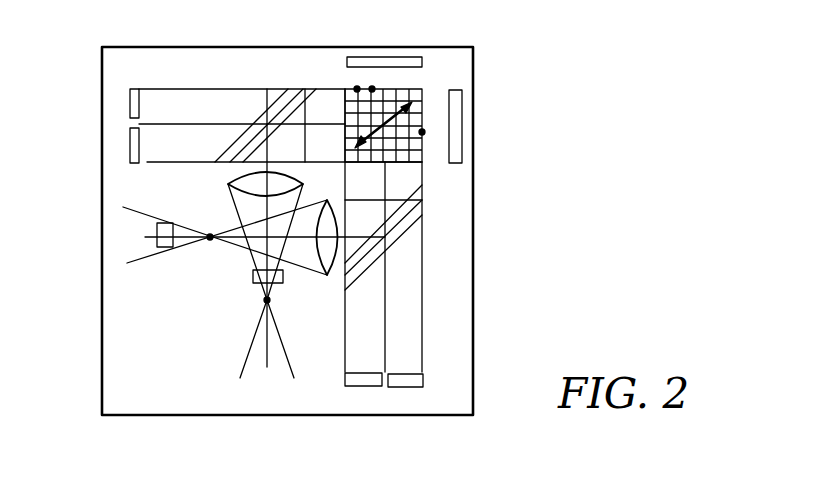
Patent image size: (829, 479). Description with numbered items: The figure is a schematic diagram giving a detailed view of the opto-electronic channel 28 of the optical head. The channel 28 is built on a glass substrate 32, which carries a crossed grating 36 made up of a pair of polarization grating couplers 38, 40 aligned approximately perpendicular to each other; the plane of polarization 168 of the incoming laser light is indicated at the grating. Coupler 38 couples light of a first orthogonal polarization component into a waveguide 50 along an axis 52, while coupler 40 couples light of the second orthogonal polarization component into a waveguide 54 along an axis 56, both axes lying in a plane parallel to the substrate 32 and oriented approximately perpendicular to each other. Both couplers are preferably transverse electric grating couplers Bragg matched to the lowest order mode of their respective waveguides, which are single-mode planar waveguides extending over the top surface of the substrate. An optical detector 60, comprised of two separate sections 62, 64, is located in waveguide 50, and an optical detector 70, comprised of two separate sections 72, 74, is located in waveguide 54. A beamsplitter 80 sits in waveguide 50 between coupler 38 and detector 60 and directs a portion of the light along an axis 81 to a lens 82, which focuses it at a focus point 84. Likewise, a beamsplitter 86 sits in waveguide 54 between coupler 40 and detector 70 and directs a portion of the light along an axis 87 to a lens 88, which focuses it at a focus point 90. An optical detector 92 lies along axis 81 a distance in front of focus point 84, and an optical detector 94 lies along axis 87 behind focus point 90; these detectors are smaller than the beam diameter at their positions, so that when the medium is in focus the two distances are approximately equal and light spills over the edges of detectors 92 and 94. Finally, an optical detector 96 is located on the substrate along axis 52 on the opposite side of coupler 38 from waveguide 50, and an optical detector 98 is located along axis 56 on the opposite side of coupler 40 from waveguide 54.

The opto-electronic channel 28 is at (86, 248).
The glass substrate 32 is at (200, 46).
The crossed grating 36 is at (357, 88).
The polarization grating coupler 38 is at (422, 133).
The polarization grating coupler 40 is at (372, 88).
The waveguide 50 is at (213, 68).
The axis 52 is at (213, 106).
The waveguide 54 is at (443, 318).
The axis 56 is at (386, 292).
The optical detector 60 is at (133, 88).
The detector section 62 is at (130, 103).
The detector section 64 is at (130, 142).
The optical detector 70 is at (423, 380).
The detector section 72 is at (408, 387).
The detector section 74 is at (365, 387).
The beamsplitter 80 is at (278, 75).
The axis 81 is at (260, 205).
The lens 82 is at (228, 184).
The focus point 84 is at (267, 301).
The beamsplitter 86 is at (411, 222).
The axis 87 is at (258, 241).
The lens 88 is at (327, 276).
The focus point 90 is at (210, 238).
The optical detector 92 is at (253, 278).
The optical detector 94 is at (164, 223).
The optical detector 96 is at (462, 115).
The optical detector 98 is at (412, 57).
The plane of polarization 168 is at (422, 116).